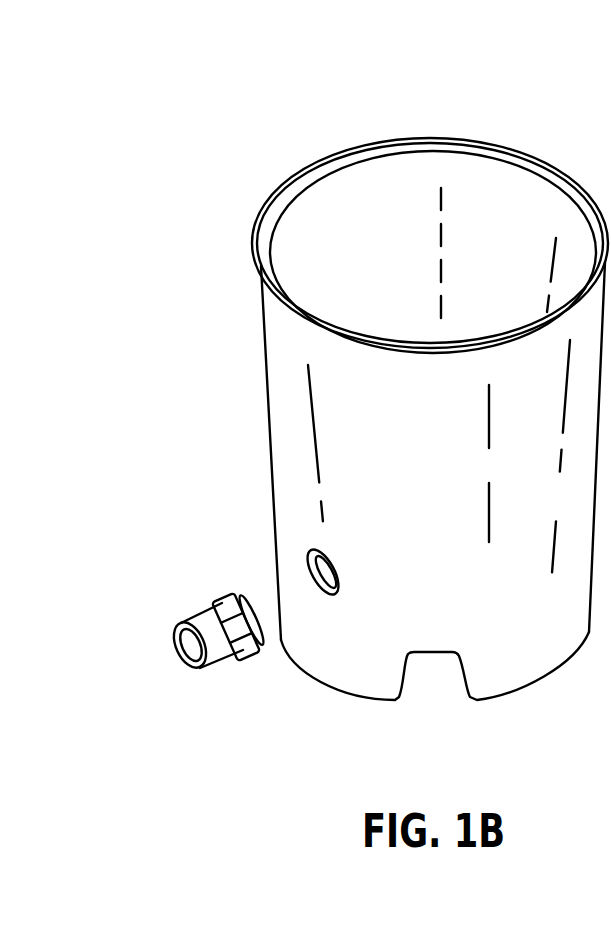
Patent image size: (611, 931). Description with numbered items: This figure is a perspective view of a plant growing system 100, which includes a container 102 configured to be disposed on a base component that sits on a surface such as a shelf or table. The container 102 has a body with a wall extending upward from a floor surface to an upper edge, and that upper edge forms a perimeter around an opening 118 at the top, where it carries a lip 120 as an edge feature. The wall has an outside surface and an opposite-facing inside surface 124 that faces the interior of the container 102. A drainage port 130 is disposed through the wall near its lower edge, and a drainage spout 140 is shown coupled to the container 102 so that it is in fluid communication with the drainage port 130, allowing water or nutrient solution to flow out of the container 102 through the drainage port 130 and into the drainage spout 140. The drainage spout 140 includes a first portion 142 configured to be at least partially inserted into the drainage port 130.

The plant growing system 100 is at (288, 96).
The container 102 is at (250, 345).
The opening 118 is at (426, 162).
The lip 120 is at (255, 245).
The inside surface 124 is at (320, 192).
The drainage port 130 is at (303, 569).
The drainage spout 140 is at (213, 634).
The first portion 142 is at (265, 643).